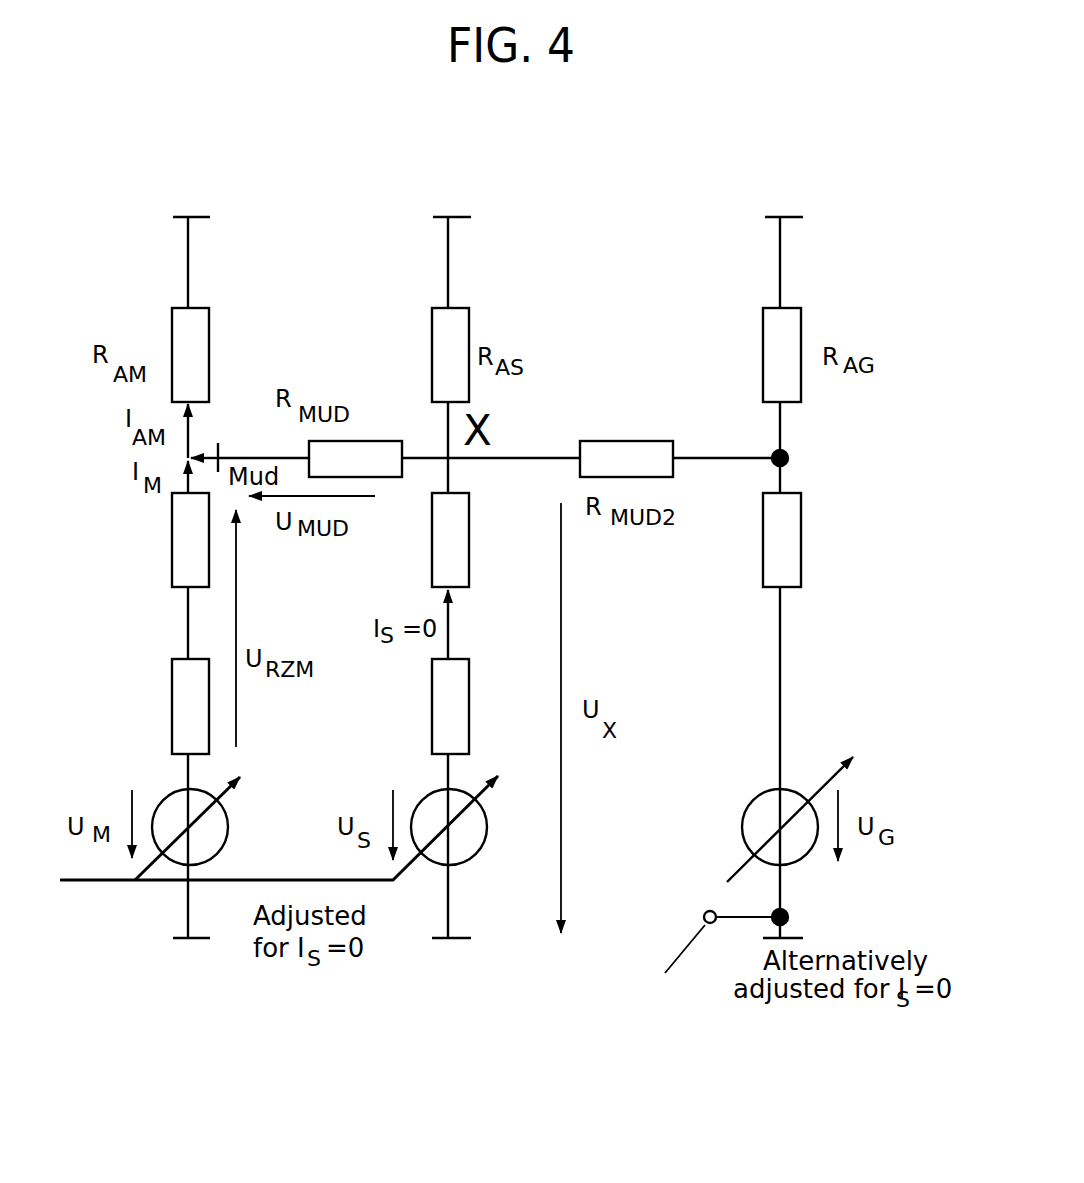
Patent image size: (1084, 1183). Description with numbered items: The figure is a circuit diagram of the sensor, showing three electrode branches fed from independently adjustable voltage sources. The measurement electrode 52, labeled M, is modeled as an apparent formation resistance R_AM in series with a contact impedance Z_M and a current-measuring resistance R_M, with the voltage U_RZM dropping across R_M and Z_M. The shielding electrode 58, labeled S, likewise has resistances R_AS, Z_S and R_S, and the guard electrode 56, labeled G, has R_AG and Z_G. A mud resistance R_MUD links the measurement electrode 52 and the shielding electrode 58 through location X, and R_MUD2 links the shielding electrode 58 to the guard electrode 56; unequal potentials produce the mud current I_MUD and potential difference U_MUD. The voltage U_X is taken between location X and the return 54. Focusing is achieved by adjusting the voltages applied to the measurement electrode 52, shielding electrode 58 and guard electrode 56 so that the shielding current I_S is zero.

The measurement electrode 52 is at (135, 635).
The return 54 is at (716, 959).
The guard electrode 56 is at (737, 643).
The shielding electrode 58 is at (502, 638).